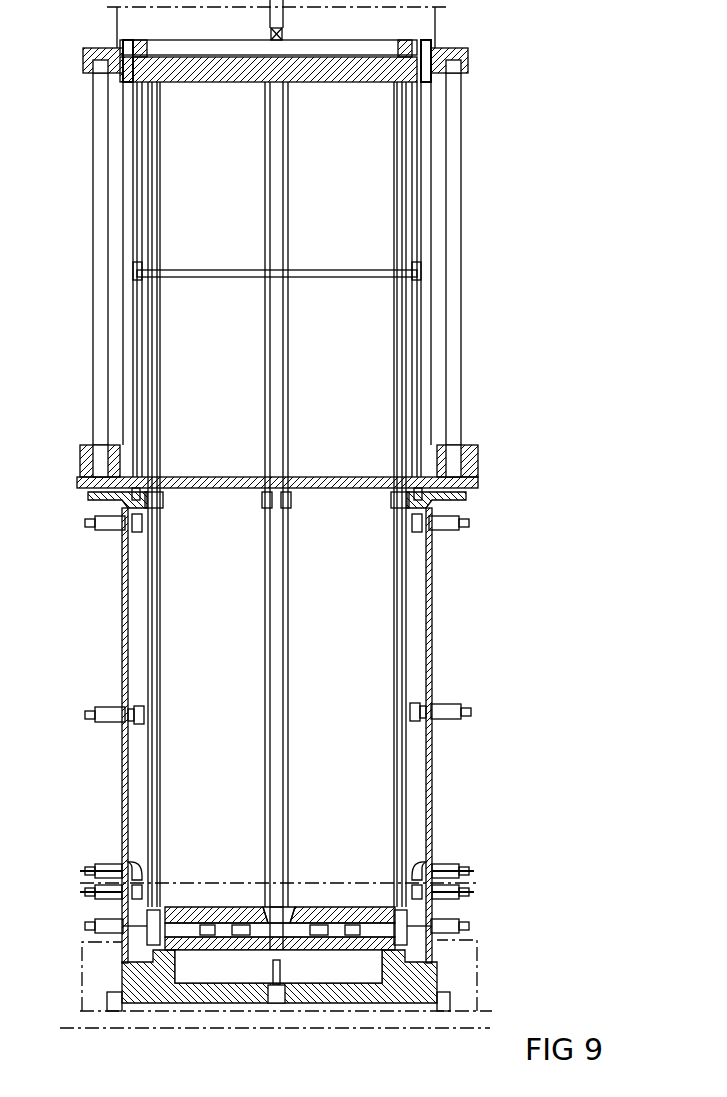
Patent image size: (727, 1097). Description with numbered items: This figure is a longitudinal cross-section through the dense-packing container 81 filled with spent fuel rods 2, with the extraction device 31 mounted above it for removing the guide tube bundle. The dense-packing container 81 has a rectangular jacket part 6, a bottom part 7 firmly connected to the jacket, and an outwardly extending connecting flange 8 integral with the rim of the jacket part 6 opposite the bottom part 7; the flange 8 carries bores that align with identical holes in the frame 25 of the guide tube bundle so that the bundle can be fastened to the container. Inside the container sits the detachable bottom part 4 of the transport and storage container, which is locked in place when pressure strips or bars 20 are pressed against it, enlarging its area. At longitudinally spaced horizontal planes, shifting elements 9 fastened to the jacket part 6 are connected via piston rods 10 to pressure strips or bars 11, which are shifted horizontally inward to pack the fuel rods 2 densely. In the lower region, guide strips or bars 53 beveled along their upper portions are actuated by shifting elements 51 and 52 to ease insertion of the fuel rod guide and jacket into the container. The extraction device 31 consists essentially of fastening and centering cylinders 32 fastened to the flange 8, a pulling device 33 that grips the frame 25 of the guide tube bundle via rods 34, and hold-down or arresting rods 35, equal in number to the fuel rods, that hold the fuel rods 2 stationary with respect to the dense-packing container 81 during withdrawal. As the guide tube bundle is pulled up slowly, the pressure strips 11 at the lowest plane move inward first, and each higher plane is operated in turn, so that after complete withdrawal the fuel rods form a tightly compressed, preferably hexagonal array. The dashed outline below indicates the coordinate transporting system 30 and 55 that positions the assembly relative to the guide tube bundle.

The pulling device 33 is at (331, 48).
The rods 34 is at (128, 134).
The extraction device 31 is at (342, 153).
The fastening and centering cylinders 32 is at (94, 208).
The hold-down or arresting rods 35 is at (266, 368).
The connecting flange 8 is at (95, 500).
The frame 25 is at (150, 510).
The fuel rods 2 is at (264, 552).
The jacket part 6 is at (433, 594).
The dense-packing container 81 is at (433, 640).
The shifting elements 9 is at (110, 718).
The piston rods 10 is at (124, 708).
The pressure strips or bars 11 is at (132, 700).
The shifting elements 51 is at (103, 868).
The shifting elements 52 is at (90, 881).
The guide strips or bars 53 is at (134, 862).
The pressure strips or bars 20 is at (440, 912).
The bottom part 4 is at (180, 943).
The bottom part 7 is at (222, 1005).
The coordinate transporting system 55 is at (478, 968).
The coordinate transporting system 30 is at (95, 1022).